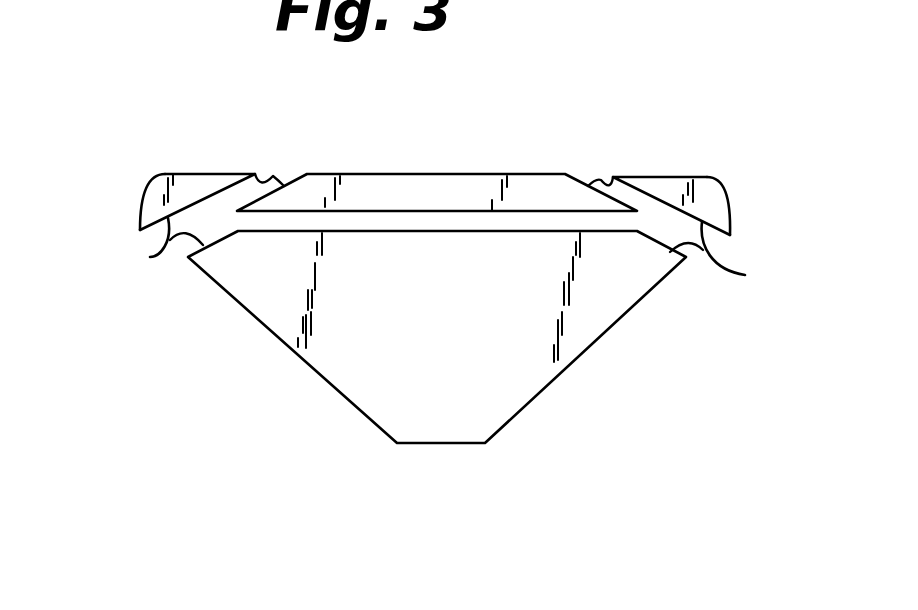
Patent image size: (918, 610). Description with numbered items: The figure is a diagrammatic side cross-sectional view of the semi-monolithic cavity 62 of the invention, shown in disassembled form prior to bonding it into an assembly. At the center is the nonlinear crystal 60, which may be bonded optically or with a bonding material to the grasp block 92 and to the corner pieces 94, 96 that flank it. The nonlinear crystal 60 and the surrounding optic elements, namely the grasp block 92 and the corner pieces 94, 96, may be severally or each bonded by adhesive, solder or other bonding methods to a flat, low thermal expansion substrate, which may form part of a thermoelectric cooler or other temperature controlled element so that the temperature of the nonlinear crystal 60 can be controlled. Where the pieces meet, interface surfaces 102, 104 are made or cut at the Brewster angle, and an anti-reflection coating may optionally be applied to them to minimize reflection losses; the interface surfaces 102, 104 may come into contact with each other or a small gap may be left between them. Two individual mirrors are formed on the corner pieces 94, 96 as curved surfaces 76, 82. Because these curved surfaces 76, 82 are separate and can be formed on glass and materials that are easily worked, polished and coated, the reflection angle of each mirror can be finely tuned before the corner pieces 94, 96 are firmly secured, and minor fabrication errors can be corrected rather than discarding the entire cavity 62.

The nonlinear crystal 60 is at (412, 183).
The semi-monolithic cavity 62 is at (150, 389).
The curved surface 76 is at (733, 192).
The curved surface 82 is at (137, 212).
The grasp block 92 is at (323, 362).
The corner piece 94 is at (670, 177).
The corner piece 96 is at (185, 174).
The interface surface 102 is at (582, 178).
The interface surface 104 is at (278, 173).